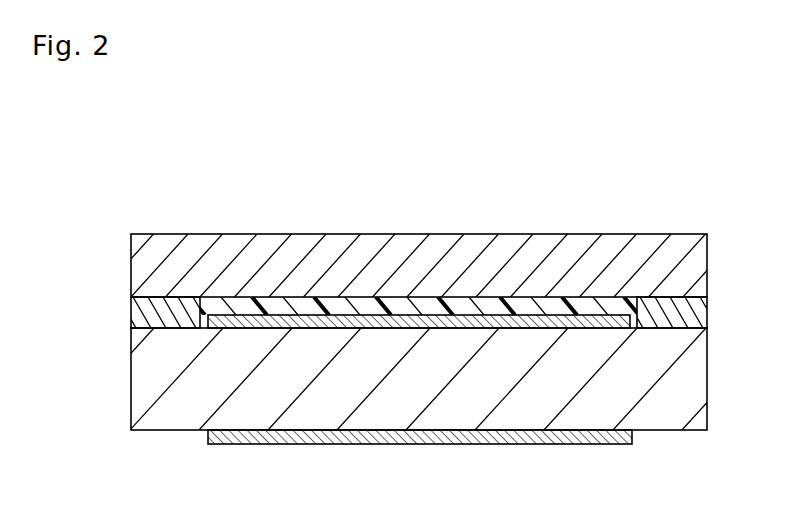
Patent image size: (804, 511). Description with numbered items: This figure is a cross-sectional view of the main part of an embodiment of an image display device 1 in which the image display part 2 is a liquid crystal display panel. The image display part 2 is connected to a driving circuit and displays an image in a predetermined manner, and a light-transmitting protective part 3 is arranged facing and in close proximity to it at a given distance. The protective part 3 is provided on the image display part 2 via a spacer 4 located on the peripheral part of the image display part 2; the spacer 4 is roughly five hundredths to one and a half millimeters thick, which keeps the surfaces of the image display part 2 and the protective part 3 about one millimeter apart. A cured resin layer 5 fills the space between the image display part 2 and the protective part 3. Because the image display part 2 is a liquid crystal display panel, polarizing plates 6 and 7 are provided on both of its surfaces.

The image display device 1 is at (122, 118).
The image display part 2 is at (708, 372).
The protective part 3 is at (708, 255).
The spacer 4 is at (130, 314).
The cured resin layer 5 is at (362, 298).
The polarizing plate 6 is at (530, 316).
The polarizing plate 7 is at (477, 445).